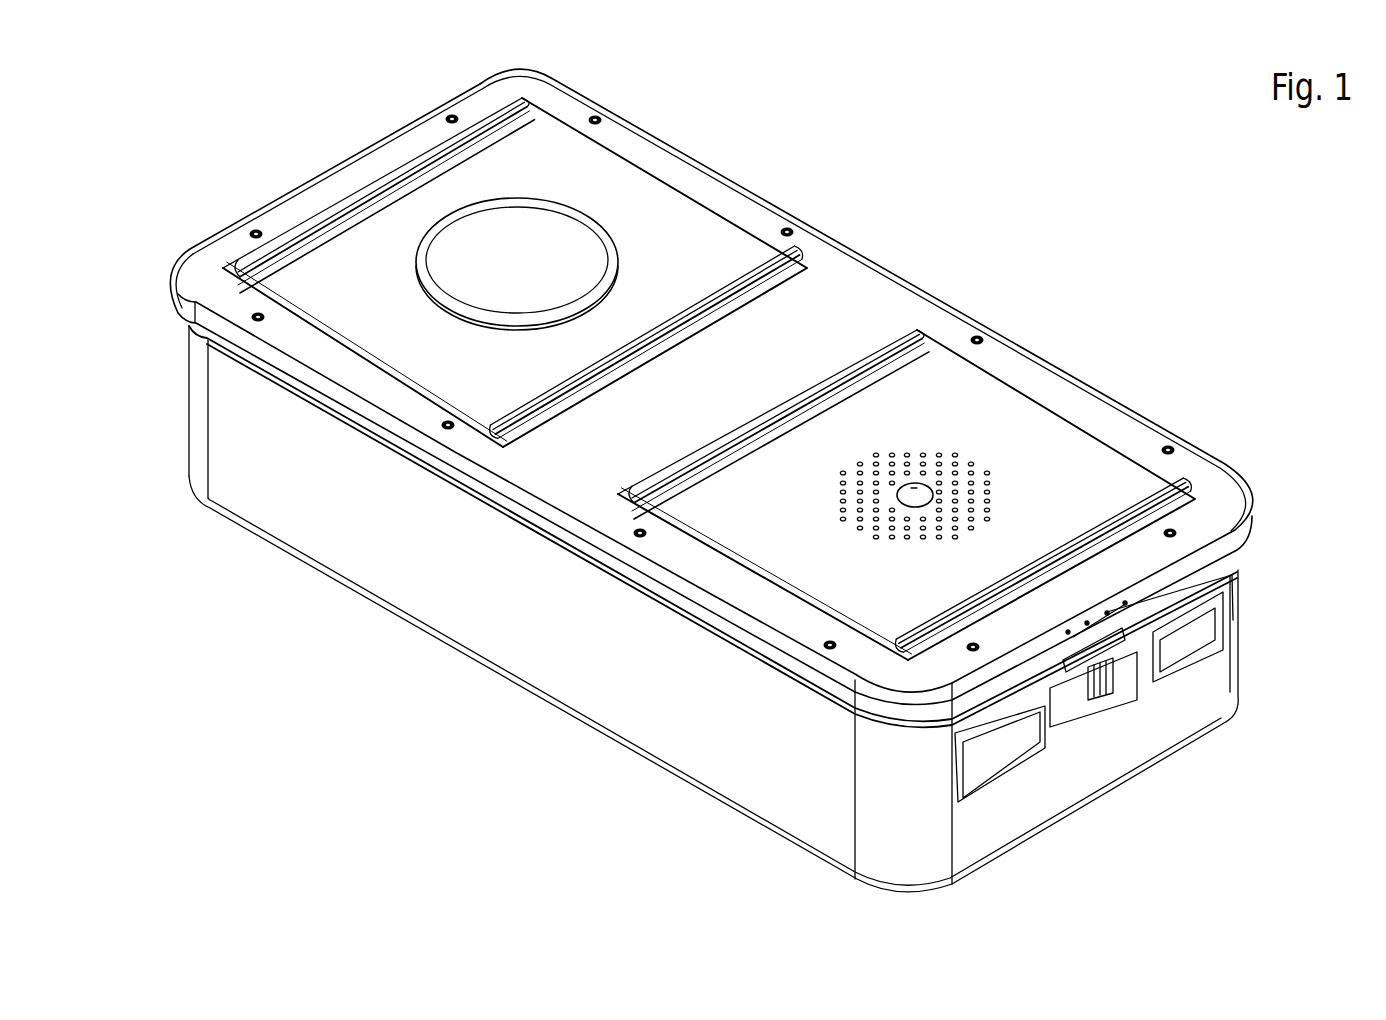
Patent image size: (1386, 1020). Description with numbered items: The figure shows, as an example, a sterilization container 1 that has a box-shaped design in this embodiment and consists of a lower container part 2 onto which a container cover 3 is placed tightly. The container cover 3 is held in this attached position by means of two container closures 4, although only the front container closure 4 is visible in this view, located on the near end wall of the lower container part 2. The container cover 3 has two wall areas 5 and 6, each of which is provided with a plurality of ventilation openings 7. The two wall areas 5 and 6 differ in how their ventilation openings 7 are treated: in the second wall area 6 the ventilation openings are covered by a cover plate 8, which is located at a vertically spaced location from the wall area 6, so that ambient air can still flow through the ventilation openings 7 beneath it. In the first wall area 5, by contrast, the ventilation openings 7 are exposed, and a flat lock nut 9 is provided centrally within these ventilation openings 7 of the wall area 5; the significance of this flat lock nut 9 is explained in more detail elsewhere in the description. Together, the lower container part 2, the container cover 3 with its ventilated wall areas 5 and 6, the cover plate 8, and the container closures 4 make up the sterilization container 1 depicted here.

The sterilization container 1 is at (230, 601).
The lower container part 2 is at (590, 705).
The container cover 3 is at (890, 262).
The container closure 4 is at (1107, 688).
The wall area 5 is at (1009, 421).
The wall area 6 is at (607, 215).
The ventilation openings 7 is at (955, 455).
The cover plate 8 is at (462, 233).
The flat lock nut 9 is at (933, 498).